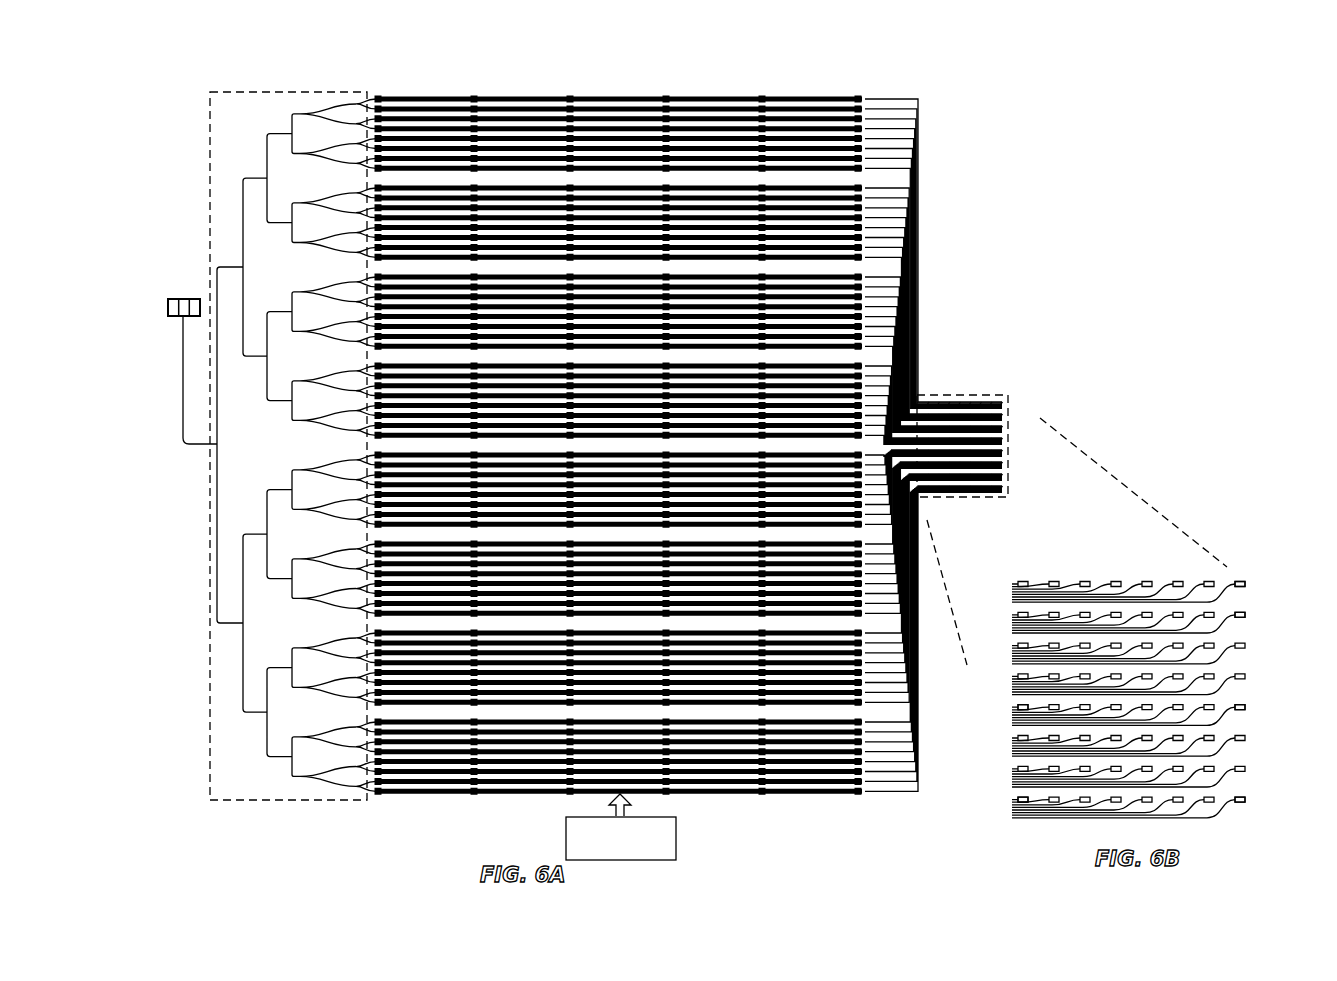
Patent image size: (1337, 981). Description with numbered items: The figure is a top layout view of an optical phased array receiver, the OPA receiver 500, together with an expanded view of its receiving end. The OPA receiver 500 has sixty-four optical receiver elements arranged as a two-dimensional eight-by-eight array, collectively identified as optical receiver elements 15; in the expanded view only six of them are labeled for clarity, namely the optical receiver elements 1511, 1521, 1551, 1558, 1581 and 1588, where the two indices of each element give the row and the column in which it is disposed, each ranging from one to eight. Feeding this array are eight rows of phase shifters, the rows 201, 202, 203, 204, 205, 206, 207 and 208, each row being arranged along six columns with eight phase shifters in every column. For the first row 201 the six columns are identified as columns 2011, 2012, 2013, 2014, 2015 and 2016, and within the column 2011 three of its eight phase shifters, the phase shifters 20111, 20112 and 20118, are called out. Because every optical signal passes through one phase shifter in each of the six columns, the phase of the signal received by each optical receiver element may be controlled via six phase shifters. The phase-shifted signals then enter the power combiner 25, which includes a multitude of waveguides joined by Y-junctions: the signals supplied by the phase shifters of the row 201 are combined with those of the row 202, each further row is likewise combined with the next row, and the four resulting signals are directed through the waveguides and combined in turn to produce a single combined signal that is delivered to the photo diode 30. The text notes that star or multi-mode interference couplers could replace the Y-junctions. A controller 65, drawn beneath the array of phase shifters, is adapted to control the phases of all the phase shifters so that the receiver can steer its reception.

In FIG. 6A, the OPA receiver 500 is at (1078, 97).
In FIG. 6A, the power combiner 25 is at (210, 156).
In FIG. 6A, the photo diode 30 is at (185, 298).
In FIG. 6A, the controller 65 is at (678, 838).
In FIG. 6A, the optical receiver elements 15 is at (972, 395).
In FIG. 6B, the optical receiver elements 15 is at (1080, 555).
In FIG. 6A, the row of phase shifters 201 is at (709, 247).
In FIG. 6A, the row of phase shifters 202 is at (945, 223).
In FIG. 6A, the row of phase shifters 203 is at (945, 318).
In FIG. 6A, the row of phase shifters 204 is at (689, 405).
In FIG. 6A, the row of phase shifters 205 is at (689, 487).
In FIG. 6A, the row of phase shifters 206 is at (689, 537).
In FIG. 6A, the row of phase shifters 207 is at (689, 588).
In FIG. 6A, the row of phase shifters 208 is at (892, 806).
In FIG. 6A, the phase shifter 20111 is at (868, 101).
In FIG. 6A, the phase shifter 20112 is at (868, 110).
In FIG. 6A, the phase shifter 20118 is at (868, 168).
In FIG. 6A, the column of phase shifters 2011 is at (860, 97).
In FIG. 6A, the column of phase shifters 2012 is at (765, 97).
In FIG. 6A, the column of phase shifters 2013 is at (669, 97).
In FIG. 6A, the column of phase shifters 2014 is at (573, 97).
In FIG. 6A, the column of phase shifters 2015 is at (477, 97).
In FIG. 6A, the column of phase shifters 2016 is at (381, 97).
In FIG. 6B, the optical receiver element 1511 is at (1246, 584).
In FIG. 6B, the optical receiver element 1521 is at (1246, 615).
In FIG. 6B, the optical receiver element 1551 is at (1246, 707).
In FIG. 6B, the optical receiver element 1581 is at (1246, 800).
In FIG. 6B, the optical receiver element 1558 is at (1018, 705).
In FIG. 6B, the optical receiver element 1588 is at (1018, 798).